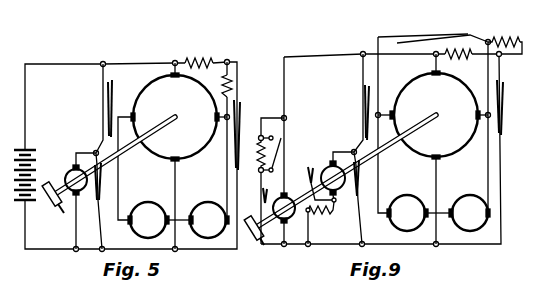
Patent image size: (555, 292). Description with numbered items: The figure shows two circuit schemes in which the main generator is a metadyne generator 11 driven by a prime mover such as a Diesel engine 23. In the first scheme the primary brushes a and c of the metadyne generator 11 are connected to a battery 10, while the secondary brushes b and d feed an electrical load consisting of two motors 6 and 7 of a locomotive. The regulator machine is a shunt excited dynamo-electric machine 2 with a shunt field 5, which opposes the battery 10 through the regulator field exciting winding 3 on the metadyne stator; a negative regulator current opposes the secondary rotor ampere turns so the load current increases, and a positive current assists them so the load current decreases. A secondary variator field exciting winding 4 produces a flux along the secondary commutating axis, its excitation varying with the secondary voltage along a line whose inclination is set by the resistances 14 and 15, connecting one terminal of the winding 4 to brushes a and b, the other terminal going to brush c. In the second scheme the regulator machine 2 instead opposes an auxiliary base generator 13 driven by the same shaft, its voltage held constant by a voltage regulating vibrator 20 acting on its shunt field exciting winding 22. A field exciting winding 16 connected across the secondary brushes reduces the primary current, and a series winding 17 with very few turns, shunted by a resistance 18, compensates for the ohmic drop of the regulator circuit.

In FIG. 5, the regulator machine 2 is at (76, 201).
In FIG. 9, the regulator machine 2 is at (338, 177).
In FIG. 5, the regulator field exciting winding 3 is at (100, 108).
In FIG. 9, the regulator field exciting winding 3 is at (358, 103).
In FIG. 5, the secondary variator field exciting winding 4 is at (243, 135).
In FIG. 9, the secondary variator field exciting winding 4 is at (506, 107).
In FIG. 5, the shunt field 5 is at (102, 201).
In FIG. 9, the shunt field 5 is at (362, 198).
In FIG. 5, the motor 6 is at (148, 214).
In FIG. 9, the motor 6 is at (407, 213).
In FIG. 5, the motor 7 is at (199, 214).
In FIG. 9, the motor 7 is at (459, 213).
In FIG. 5, the battery 10 is at (33, 206).
In FIG. 5, the metadyne generator 11 is at (172, 156).
In FIG. 9, the metadyne generator 11 is at (433, 149).
In FIG. 9, the base generator 13 is at (290, 150).
In FIG. 5, the resistance 14 is at (200, 54).
In FIG. 9, the resistance 14 is at (458, 61).
In FIG. 5, the resistance 15 is at (232, 90).
In FIG. 9, the resistance 15 is at (504, 116).
In FIG. 9, the field exciting winding 16 is at (433, 115).
In FIG. 9, the series winding 17 is at (320, 175).
In FIG. 9, the resistance 18 is at (320, 223).
In FIG. 9, the voltage regulating vibrator 20 is at (282, 153).
In FIG. 9, the shunt field exciting winding 22 is at (254, 194).
In FIG. 5, the Diesel engine 23 is at (52, 210).
In FIG. 9, the Diesel engine 23 is at (252, 240).